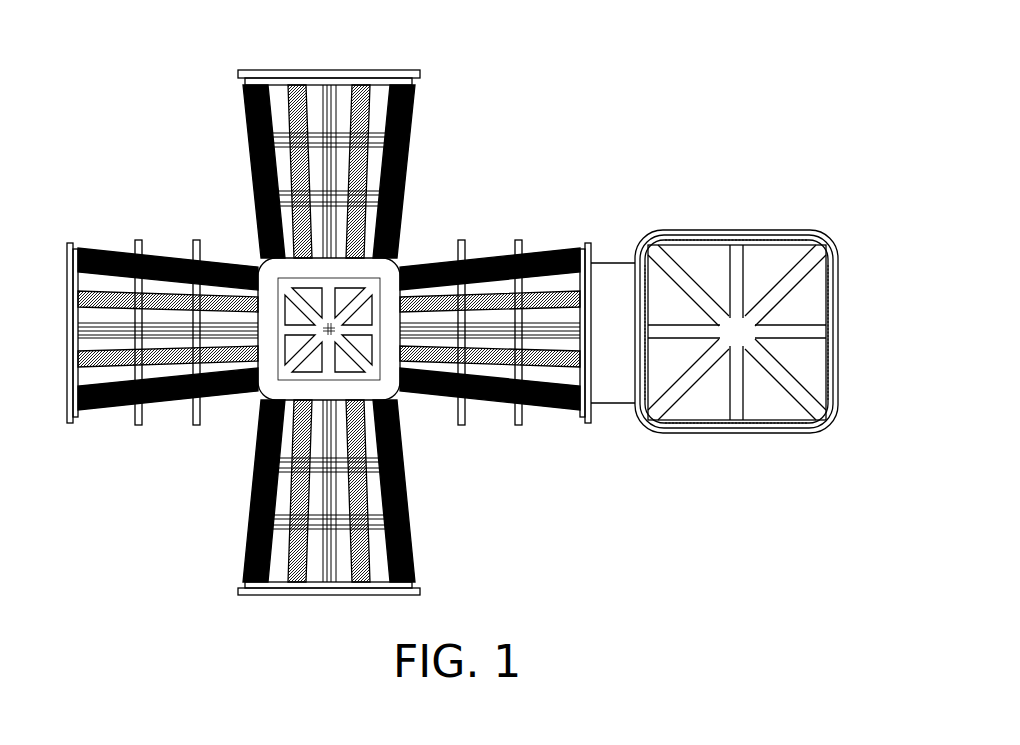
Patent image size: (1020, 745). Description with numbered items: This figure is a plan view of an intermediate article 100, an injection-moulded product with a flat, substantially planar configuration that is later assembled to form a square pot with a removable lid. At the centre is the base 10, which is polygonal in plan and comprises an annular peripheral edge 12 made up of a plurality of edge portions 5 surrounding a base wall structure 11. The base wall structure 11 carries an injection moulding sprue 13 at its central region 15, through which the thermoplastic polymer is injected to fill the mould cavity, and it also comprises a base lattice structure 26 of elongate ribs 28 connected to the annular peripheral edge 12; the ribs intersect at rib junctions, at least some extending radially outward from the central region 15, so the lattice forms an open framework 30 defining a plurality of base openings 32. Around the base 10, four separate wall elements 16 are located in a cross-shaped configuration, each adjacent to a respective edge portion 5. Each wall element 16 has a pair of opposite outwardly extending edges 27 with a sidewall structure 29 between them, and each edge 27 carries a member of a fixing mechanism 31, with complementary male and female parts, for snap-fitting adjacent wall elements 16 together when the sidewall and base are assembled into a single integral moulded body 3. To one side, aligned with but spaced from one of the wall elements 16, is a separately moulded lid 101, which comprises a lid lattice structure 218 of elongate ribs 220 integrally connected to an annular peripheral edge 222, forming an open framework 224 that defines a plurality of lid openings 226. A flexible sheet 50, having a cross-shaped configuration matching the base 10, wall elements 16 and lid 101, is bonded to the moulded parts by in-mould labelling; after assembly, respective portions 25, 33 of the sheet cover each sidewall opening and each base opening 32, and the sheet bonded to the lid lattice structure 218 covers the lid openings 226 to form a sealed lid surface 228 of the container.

The intermediate article 100 is at (141, 299).
The single integral moulded body 3 is at (275, 72).
The edge portion 5 is at (256, 266).
The base 10 is at (300, 286).
The base wall structure 11 is at (328, 325).
The annular peripheral edge 12 is at (298, 88).
The injection moulding sprue 13 is at (326, 338).
The central region 15 is at (340, 345).
The wall element 16 is at (273, 90).
The portion of the flexible sheet 25 is at (95, 384).
The base lattice structure 26 is at (304, 342).
The outwardly extending edge 27 is at (495, 334).
The elongate rib 28 is at (298, 362).
The sidewall structure 29 is at (521, 252).
The open framework 30 is at (360, 368).
The fixing mechanism 31 is at (137, 243).
The base opening 32 is at (362, 318).
The portion of the flexible sheet 33 is at (333, 340).
The flexible sheet 50 is at (618, 262).
The lid 101 is at (768, 316).
The lid lattice structure 218 is at (738, 297).
The elongate rib 220 is at (750, 272).
The annular peripheral edge 222 is at (832, 237).
The open framework 224 is at (668, 402).
The lid opening 226 is at (775, 403).
The sealed lid surface 228 is at (828, 372).